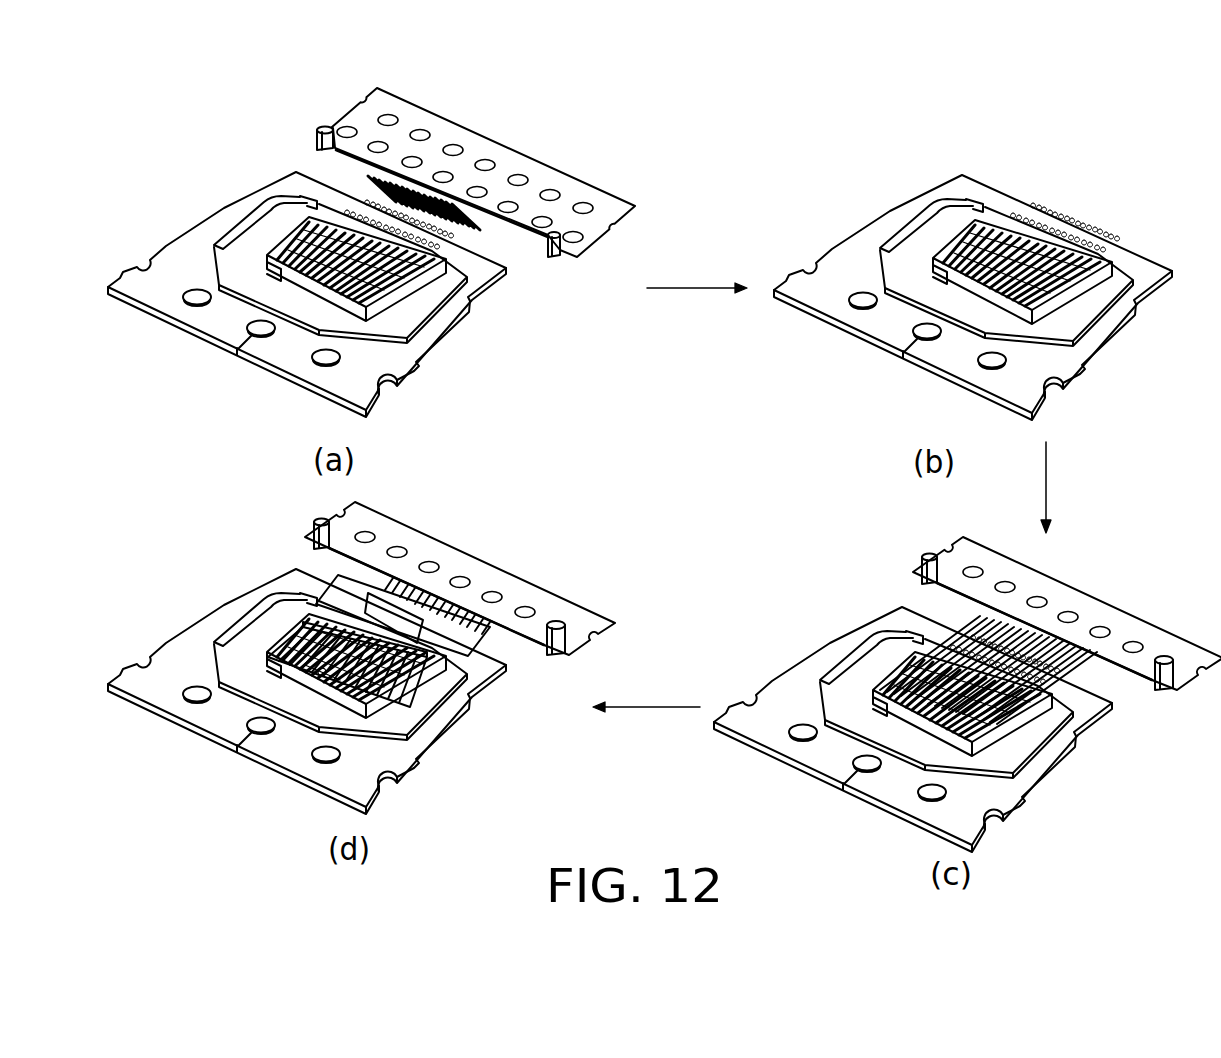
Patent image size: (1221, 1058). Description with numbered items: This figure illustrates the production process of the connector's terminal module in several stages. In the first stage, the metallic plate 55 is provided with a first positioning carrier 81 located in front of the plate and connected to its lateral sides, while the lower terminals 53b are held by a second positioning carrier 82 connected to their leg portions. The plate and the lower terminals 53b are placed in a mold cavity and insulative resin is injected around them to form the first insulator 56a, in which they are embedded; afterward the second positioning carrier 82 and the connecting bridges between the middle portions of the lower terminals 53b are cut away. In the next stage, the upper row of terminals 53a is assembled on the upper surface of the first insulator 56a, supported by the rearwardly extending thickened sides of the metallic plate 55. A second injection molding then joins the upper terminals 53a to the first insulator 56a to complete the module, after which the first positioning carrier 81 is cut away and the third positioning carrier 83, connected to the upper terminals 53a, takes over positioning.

The first positioning carrier 81 is at (357, 381).
The second positioning carrier 82 is at (497, 150).
The third positioning carrier 83 is at (1093, 608).
The metallic plate 55 is at (392, 287).
The upper row of terminals 53a is at (903, 668).
The lower terminals 53b is at (366, 180).
The first insulator 56a is at (320, 674).